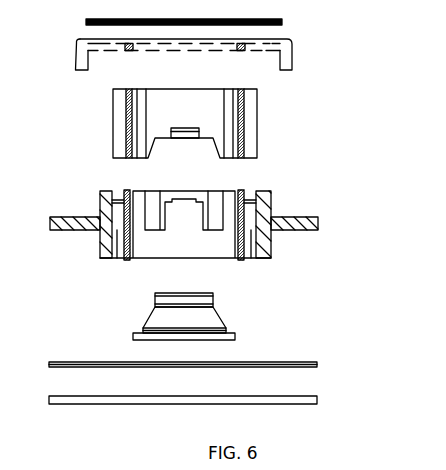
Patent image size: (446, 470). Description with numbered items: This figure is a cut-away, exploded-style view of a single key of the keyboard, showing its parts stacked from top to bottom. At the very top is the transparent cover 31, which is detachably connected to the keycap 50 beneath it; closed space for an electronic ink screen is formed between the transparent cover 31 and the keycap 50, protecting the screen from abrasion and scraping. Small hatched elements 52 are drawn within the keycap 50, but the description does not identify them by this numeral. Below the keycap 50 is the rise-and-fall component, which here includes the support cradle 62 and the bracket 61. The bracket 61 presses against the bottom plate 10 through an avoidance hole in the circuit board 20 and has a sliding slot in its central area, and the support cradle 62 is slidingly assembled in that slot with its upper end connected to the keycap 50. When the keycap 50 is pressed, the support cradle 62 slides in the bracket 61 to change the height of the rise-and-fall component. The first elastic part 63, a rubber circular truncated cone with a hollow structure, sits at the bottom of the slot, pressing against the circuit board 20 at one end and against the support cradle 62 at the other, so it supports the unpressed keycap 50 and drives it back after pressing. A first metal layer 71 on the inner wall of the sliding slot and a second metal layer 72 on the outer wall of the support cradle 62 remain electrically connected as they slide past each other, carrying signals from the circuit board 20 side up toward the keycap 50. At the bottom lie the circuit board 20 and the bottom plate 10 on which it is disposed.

The bottom plate 10 is at (318, 400).
The circuit board 20 is at (318, 364).
The transparent cover 31 is at (282, 21).
The keycap 50 is at (293, 50).
The mounting post 52 is at (128, 50).
The bracket 61 is at (231, 250).
The support cradle 62 is at (212, 123).
The first elastic part 63 is at (236, 336).
The first metal layer 71 is at (124, 262).
The second metal layer 72 is at (128, 125).